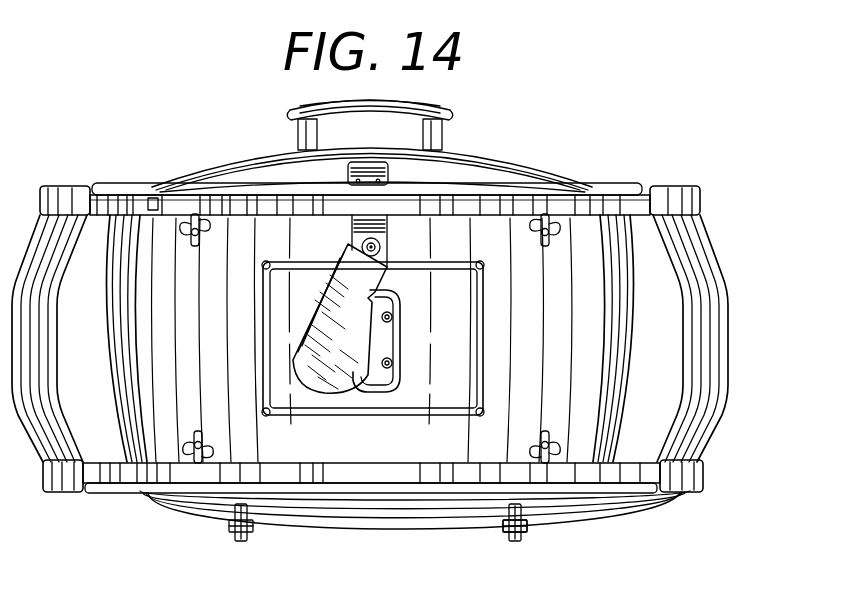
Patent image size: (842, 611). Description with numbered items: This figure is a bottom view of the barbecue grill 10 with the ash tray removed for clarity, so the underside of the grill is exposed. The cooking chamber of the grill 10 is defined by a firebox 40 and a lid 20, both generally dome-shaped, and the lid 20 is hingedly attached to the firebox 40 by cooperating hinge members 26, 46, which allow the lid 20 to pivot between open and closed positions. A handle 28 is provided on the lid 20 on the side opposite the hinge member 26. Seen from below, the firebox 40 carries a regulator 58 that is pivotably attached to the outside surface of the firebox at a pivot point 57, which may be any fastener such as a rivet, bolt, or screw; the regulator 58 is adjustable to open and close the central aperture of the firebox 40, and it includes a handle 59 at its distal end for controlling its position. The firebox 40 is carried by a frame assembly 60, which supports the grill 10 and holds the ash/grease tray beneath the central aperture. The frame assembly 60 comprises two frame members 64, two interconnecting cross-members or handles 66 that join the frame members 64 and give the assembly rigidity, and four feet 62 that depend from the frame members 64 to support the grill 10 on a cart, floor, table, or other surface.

The barbecue grill 10 is at (575, 153).
The lid 20 is at (725, 260).
The hinge member 26 is at (527, 537).
The handle 28 is at (278, 111).
The firebox 40 is at (560, 514).
The hinge member 46 is at (503, 533).
The pivot point 57 is at (364, 246).
The regulator 58 is at (330, 320).
The handle 59 is at (384, 163).
The frame assembly 60 is at (702, 482).
The feet 62 is at (147, 472).
The frame members 64 is at (118, 474).
The handles 66 is at (708, 334).